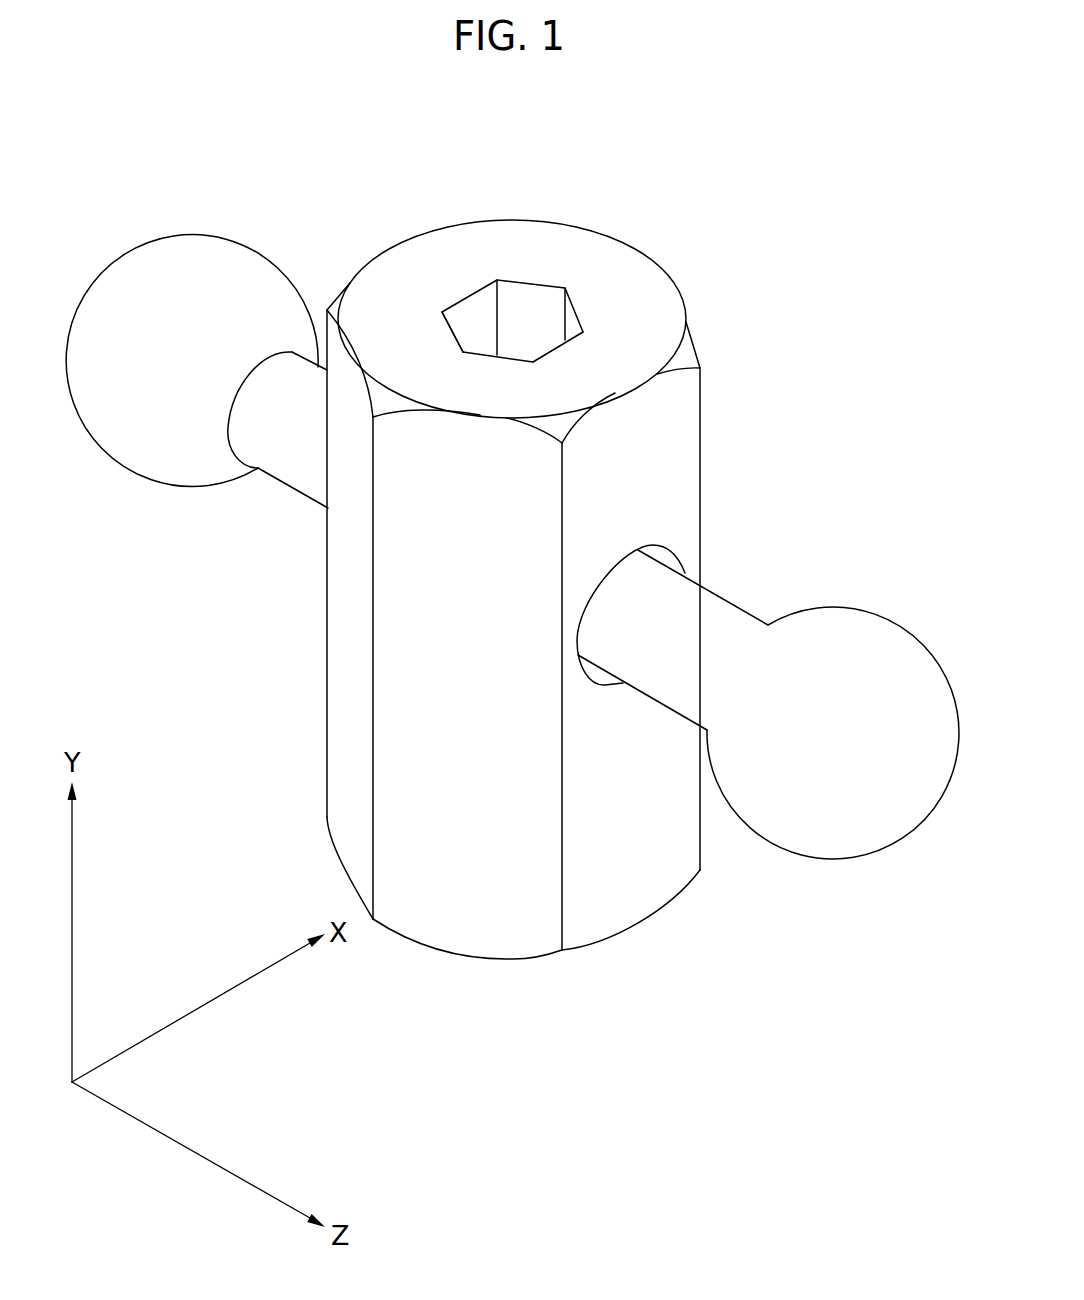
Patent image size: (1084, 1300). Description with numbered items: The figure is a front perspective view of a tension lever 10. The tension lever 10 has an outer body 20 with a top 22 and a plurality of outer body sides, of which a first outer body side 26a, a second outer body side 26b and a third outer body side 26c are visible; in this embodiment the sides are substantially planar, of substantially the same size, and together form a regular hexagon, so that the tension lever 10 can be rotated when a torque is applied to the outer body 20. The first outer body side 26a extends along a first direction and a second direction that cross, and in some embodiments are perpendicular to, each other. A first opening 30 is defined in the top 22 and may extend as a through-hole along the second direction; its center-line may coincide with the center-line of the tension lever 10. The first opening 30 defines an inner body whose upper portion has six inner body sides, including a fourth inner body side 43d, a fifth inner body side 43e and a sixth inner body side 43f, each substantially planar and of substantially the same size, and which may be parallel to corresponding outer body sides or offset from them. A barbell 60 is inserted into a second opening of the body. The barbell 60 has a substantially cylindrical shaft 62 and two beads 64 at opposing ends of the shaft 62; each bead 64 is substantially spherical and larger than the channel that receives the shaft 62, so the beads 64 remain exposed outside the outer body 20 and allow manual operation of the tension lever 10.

The tension lever 10 is at (334, 156).
The outer body 20 is at (300, 750).
The top 22 is at (527, 250).
The first outer body side 26a is at (660, 465).
The second outer body side 26b is at (475, 920).
The third outer body side 26c is at (350, 619).
The first opening 30 is at (502, 279).
The fourth inner body side 43d is at (467, 320).
The fifth inner body side 43e is at (536, 307).
The sixth inner body side 43f is at (567, 326).
The barbell 60 is at (152, 203).
The shaft 62 is at (703, 605).
The beads 64 is at (848, 630).